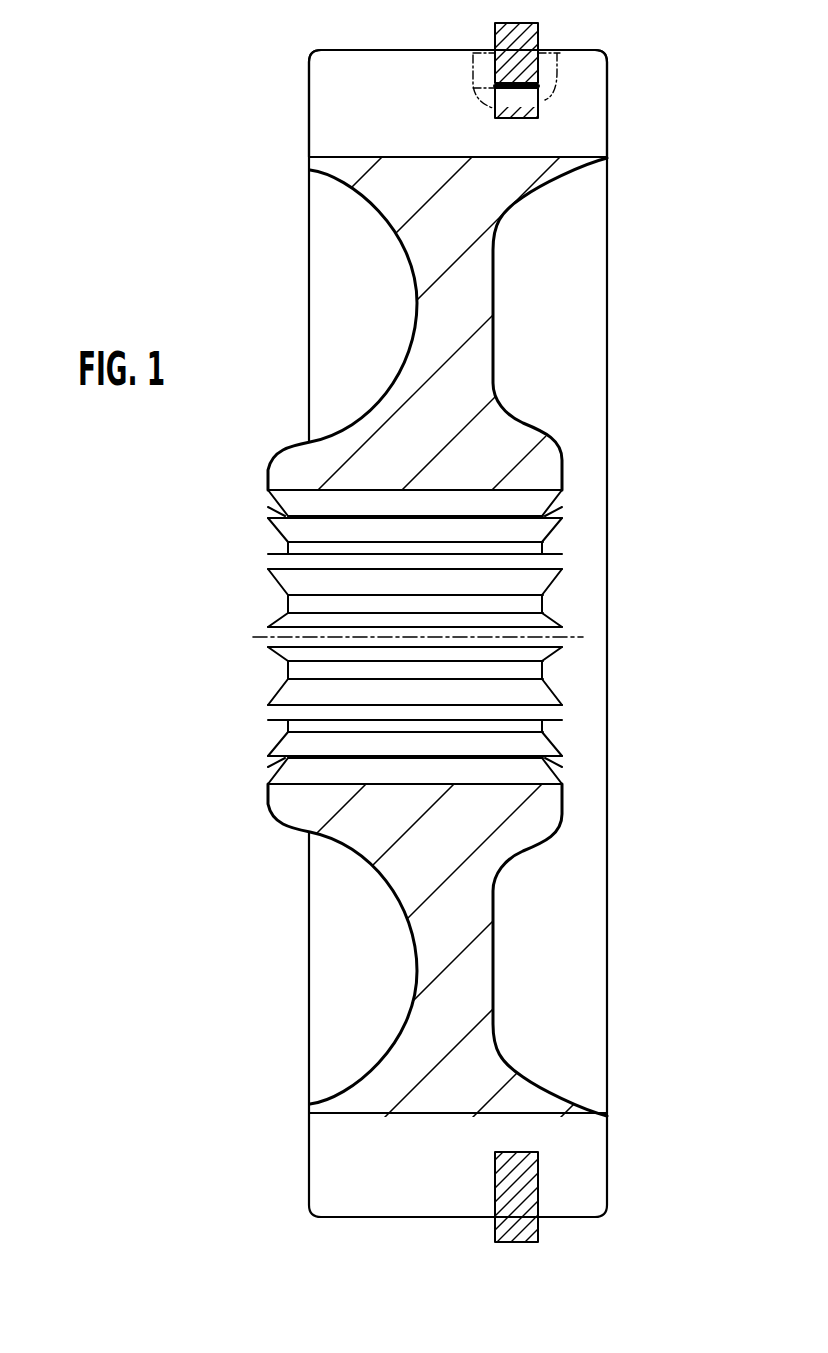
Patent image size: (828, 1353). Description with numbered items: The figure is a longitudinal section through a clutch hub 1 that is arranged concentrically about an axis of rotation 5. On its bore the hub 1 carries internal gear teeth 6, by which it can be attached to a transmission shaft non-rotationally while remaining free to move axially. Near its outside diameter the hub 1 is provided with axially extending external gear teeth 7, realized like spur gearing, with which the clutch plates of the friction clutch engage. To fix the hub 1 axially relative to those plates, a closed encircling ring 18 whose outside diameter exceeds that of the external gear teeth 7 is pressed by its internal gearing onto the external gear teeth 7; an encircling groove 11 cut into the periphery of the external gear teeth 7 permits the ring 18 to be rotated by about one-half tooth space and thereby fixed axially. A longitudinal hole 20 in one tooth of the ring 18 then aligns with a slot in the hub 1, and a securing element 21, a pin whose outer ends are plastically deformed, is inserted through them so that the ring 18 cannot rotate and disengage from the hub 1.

The hub 1 is at (218, 244).
The axis of rotation 5 is at (577, 637).
The internal gear teeth 6 is at (537, 550).
The external gear teeth 7 is at (293, 91).
The encircling groove 11 is at (494, 1216).
The ring 18 is at (522, 63).
The longitudinal hole 20 is at (532, 100).
The securing element 21 is at (552, 88).